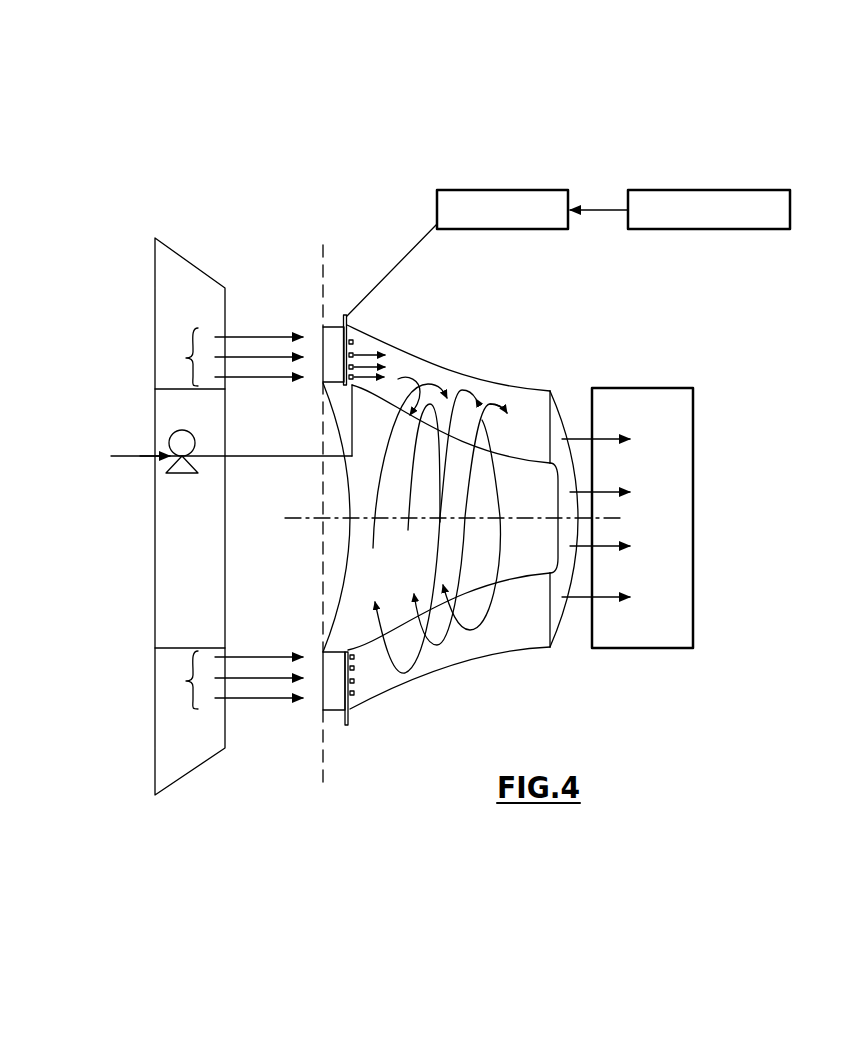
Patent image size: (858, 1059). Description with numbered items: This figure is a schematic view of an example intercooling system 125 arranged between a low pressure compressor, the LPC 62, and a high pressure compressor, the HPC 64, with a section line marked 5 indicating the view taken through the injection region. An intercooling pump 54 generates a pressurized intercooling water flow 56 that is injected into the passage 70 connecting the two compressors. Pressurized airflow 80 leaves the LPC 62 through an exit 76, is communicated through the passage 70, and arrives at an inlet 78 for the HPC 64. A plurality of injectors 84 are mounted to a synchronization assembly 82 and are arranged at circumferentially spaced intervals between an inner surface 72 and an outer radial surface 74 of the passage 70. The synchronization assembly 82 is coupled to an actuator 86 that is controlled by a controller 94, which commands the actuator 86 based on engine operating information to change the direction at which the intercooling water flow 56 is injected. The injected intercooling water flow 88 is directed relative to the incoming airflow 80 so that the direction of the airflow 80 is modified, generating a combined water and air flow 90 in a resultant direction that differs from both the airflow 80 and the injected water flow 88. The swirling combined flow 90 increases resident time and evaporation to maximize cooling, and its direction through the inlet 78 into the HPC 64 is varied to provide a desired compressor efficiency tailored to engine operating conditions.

The section line 5 is at (323, 245).
The intercooling pump 54 is at (191, 438).
The intercooling water flow 56 is at (258, 457).
The LPC 62 is at (167, 272).
The HPC 64 is at (640, 388).
The passage 70 is at (464, 366).
The inner surface 72 is at (437, 422).
The outer radial surface 74 is at (510, 391).
The exit 76 is at (318, 381).
The inlet 78 is at (557, 633).
The pressurized airflow 80 is at (186, 358).
The synchronization assembly 82 is at (355, 317).
The injectors 84 is at (358, 337).
The actuator 86 is at (497, 190).
The injected intercooling water flow 88 is at (404, 365).
The combined water and air flow 90 is at (472, 399).
The controller 94 is at (687, 190).
The intercooling system 125 is at (745, 299).